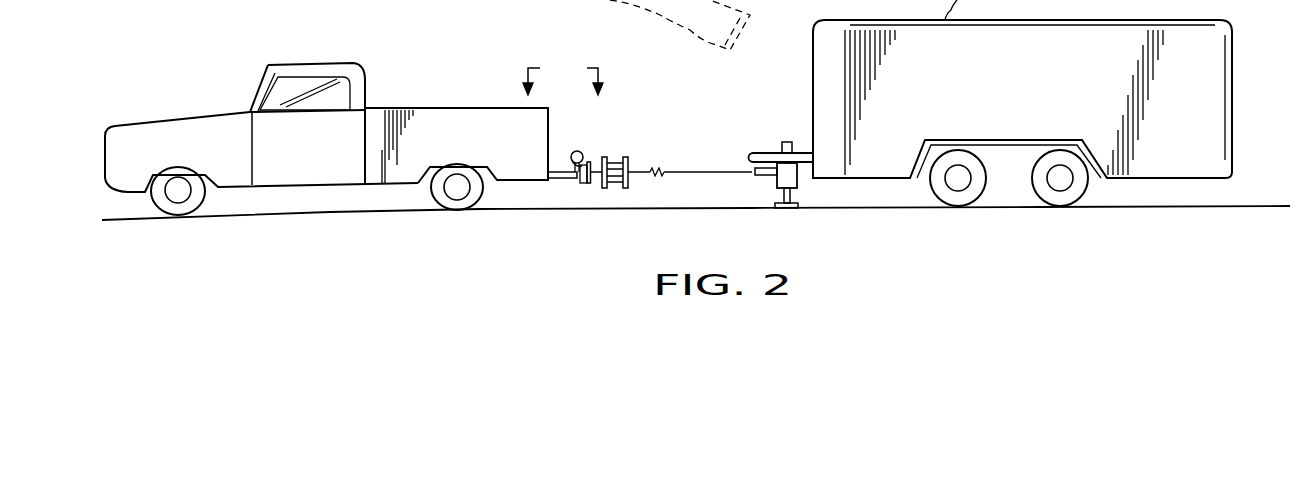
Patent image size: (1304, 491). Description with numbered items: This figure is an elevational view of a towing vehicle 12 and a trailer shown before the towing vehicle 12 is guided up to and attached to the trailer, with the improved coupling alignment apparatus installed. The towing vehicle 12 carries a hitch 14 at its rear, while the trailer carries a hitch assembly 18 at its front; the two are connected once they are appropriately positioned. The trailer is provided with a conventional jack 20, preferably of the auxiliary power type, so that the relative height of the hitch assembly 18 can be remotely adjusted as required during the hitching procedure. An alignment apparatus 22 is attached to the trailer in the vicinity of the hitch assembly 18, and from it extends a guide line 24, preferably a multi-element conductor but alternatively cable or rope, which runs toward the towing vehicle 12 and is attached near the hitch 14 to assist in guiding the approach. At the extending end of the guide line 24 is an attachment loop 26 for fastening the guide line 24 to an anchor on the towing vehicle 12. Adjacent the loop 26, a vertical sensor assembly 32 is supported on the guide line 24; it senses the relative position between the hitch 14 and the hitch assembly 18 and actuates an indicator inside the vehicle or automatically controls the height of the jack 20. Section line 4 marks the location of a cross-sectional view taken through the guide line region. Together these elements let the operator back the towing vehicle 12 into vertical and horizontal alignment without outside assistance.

The towing vehicle 12 is at (437, 103).
The section line 4- 4 is at (562, 82).
The hitch 14 is at (576, 151).
The attachment loop 26 is at (589, 185).
The vertical sensor assembly 32 is at (619, 157).
The guide line 24 is at (680, 170).
The hitch assembly 18 is at (762, 153).
The alignment apparatus 22 is at (777, 185).
The jack 20 is at (792, 197).